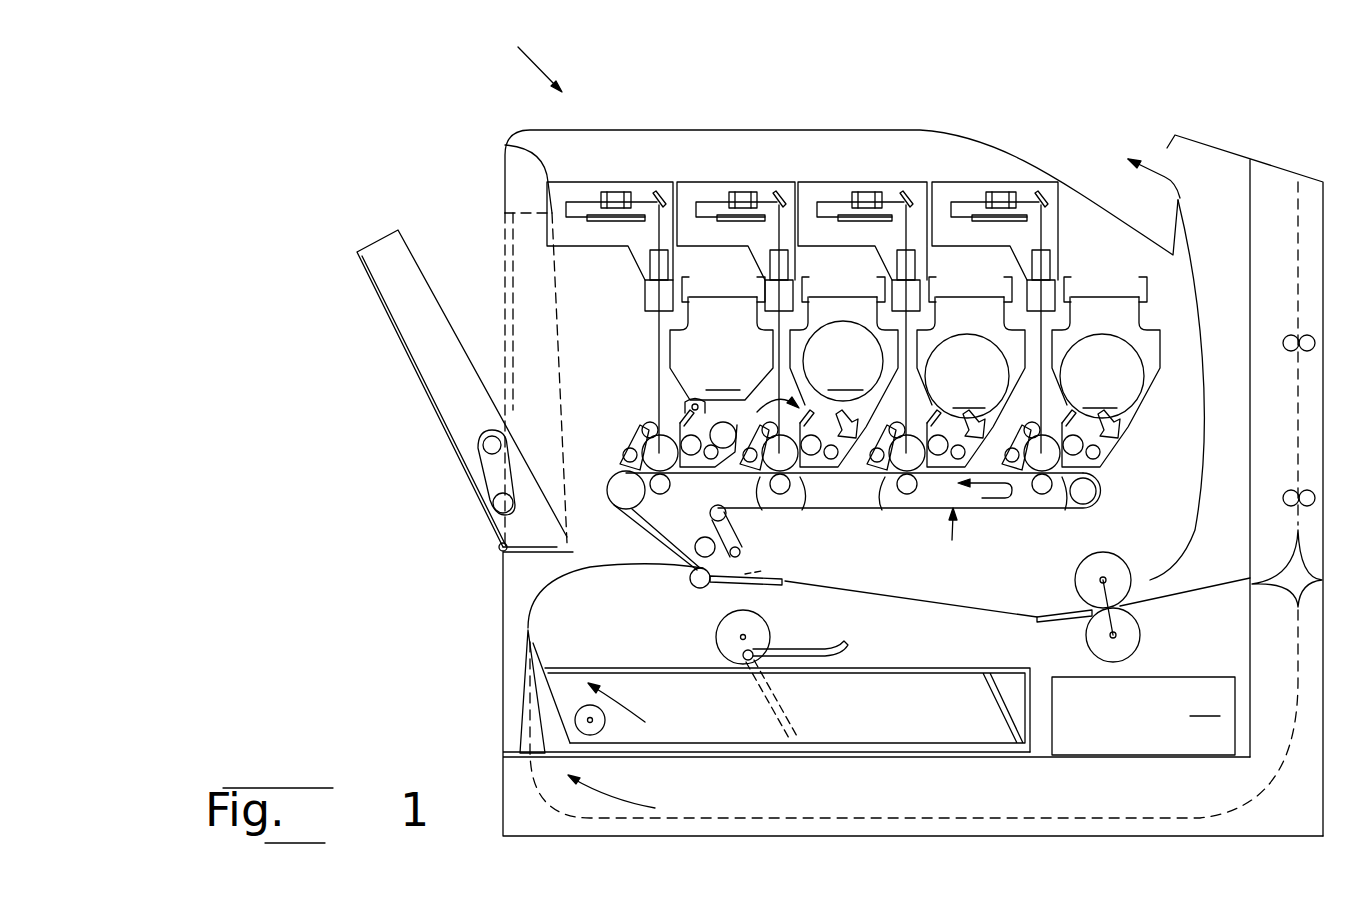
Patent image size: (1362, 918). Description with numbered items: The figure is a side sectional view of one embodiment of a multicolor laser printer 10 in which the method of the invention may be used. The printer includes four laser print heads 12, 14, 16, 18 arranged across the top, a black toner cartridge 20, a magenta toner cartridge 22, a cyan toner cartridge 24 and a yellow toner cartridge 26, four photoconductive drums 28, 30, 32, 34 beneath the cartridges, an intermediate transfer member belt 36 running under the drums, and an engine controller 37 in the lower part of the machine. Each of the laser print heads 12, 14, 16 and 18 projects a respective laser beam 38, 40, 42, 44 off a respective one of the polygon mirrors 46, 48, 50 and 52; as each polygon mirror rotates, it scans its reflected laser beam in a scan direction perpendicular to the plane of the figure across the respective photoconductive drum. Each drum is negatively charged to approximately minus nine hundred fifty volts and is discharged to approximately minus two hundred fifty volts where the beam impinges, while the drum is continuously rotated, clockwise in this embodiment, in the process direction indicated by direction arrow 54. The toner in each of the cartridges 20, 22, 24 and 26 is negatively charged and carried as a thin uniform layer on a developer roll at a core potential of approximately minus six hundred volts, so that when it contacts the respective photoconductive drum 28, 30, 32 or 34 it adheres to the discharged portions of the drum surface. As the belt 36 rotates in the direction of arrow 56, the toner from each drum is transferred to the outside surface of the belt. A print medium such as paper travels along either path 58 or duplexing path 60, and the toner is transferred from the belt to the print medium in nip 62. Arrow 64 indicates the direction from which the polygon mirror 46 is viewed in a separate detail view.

The multicolor laser printer 10 is at (1155, 100).
The laser print head 12 is at (505, 145).
The laser print head 14 is at (690, 183).
The laser print head 16 is at (850, 183).
The laser print head 18 is at (967, 183).
The black toner cartridge 20 is at (709, 329).
The magenta toner cartridge 22 is at (843, 361).
The cyan toner cartridge 24 is at (967, 376).
The yellow toner cartridge 26 is at (1102, 376).
The photoconductive drum 28 is at (652, 449).
The photoconductive drum 30 is at (757, 488).
The photoconductive drum 32 is at (880, 507).
The photoconductive drum 34 is at (1058, 508).
The intermediate transfer member belt 36 is at (948, 538).
The engine controller 37 is at (1143, 716).
The laser beam 38 is at (655, 330).
The laser beam 40 is at (717, 190).
The laser beam 42 is at (826, 183).
The laser beam 44 is at (1060, 235).
The polygon mirror 46 is at (631, 212).
The polygon mirror 48 is at (760, 212).
The polygon mirror 50 is at (887, 212).
The polygon mirror 52 is at (1022, 212).
The direction arrow 54 is at (801, 472).
The arrow 56 is at (1002, 500).
The path 58 is at (616, 702).
The duplexing path 60 is at (600, 798).
The nip 62 is at (718, 571).
The arrow 64 is at (543, 69).